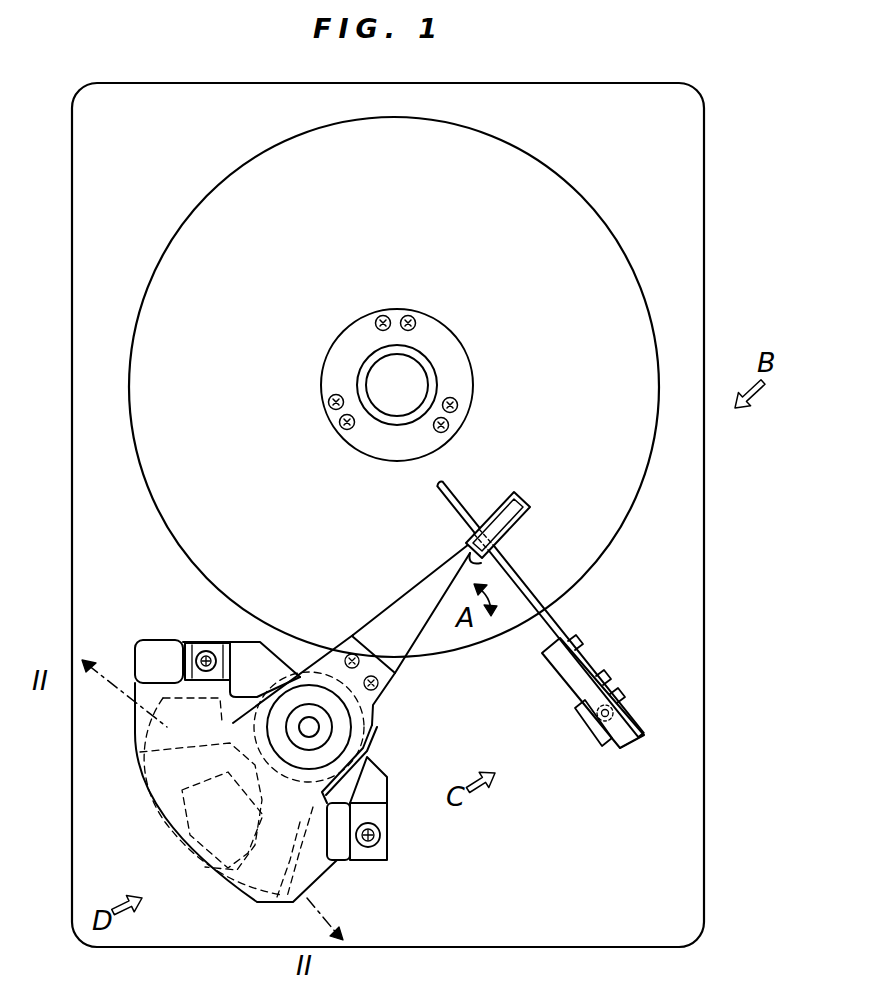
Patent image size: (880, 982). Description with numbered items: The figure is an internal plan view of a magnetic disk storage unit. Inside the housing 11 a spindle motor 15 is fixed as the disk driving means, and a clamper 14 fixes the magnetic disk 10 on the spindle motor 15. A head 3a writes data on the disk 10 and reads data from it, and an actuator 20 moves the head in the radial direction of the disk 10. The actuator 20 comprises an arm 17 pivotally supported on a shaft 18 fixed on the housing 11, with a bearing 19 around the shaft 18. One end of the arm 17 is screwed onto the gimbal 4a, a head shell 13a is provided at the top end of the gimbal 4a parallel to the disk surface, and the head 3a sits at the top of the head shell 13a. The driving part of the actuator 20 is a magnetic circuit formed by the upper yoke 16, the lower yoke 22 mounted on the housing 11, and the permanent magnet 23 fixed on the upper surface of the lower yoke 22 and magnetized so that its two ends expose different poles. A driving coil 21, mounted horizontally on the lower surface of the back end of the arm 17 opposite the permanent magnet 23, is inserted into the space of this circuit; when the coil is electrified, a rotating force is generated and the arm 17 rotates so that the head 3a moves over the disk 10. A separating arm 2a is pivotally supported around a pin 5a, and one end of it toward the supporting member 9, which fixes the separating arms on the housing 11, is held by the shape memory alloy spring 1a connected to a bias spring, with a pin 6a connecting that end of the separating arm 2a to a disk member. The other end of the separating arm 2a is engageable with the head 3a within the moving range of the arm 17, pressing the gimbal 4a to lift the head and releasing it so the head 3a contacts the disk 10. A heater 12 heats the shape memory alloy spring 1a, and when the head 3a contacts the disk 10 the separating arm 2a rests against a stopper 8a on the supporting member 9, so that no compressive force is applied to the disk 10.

The magnetic disk 10 is at (577, 203).
The housing 11 is at (686, 852).
The clamper 14 is at (468, 370).
The spindle motor 15 is at (397, 382).
The shape memory alloy spring 1a is at (596, 725).
The separating arm 2a is at (520, 568).
The head 3a is at (519, 493).
The head shell 13a is at (528, 501).
The gimbal 4a is at (418, 592).
The pin 5a is at (583, 639).
The stopper 8a is at (611, 674).
The pin 6a is at (626, 696).
The heater 12 is at (605, 748).
The supporting member 9 is at (641, 745).
The shaft 18 is at (319, 727).
The bearing 19 is at (335, 736).
The actuator 20 is at (289, 645).
The upper yoke 16 is at (337, 865).
The arm 17 is at (137, 770).
The driving coil 21 is at (206, 866).
The lower yoke 22 is at (147, 736).
The permanent magnet 23 is at (165, 672).